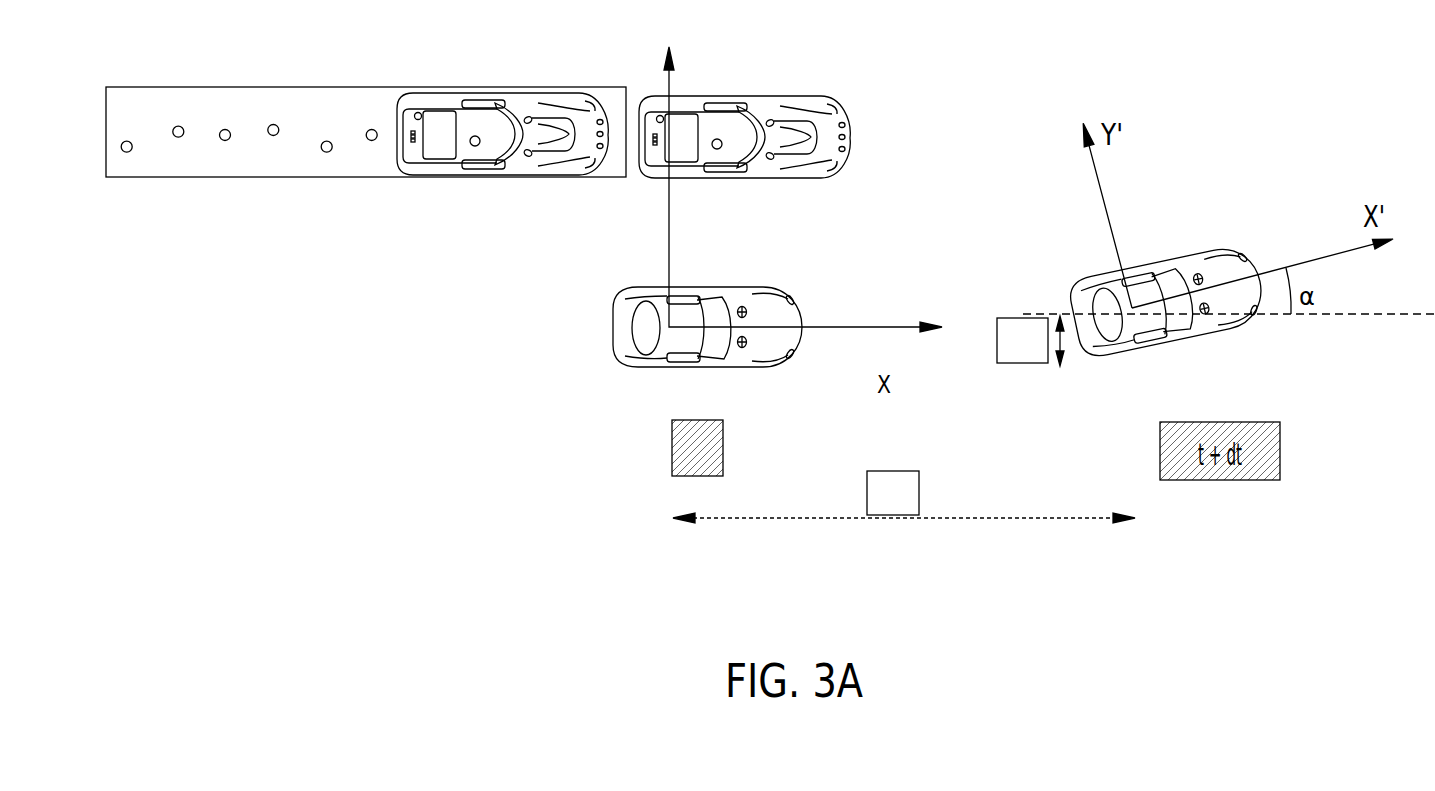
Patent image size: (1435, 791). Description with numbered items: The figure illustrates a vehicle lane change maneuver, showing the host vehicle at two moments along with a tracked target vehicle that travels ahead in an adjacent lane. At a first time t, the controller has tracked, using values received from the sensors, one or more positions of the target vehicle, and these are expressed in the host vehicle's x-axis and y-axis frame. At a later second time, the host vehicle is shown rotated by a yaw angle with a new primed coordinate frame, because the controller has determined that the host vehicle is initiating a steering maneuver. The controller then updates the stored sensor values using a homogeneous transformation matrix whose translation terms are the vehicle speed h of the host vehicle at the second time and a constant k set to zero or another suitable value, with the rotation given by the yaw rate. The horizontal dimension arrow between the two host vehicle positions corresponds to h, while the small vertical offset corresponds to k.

The constant k is at (1030, 341).
The vehicle speed h is at (904, 497).
The first time t is at (697, 448).